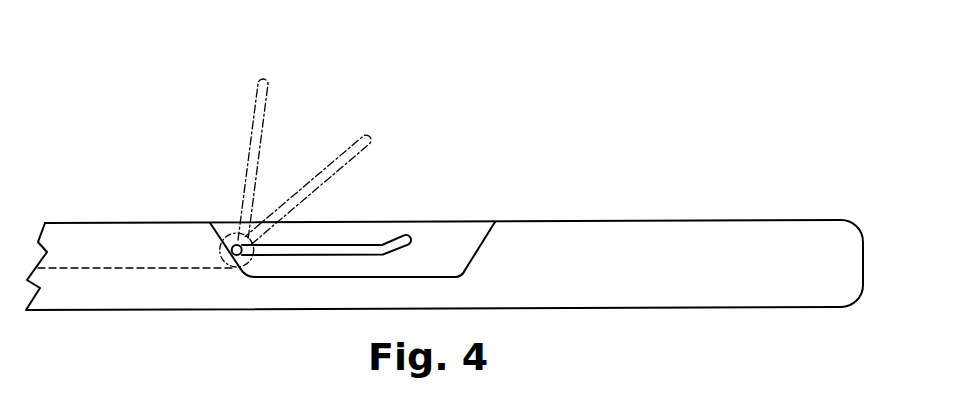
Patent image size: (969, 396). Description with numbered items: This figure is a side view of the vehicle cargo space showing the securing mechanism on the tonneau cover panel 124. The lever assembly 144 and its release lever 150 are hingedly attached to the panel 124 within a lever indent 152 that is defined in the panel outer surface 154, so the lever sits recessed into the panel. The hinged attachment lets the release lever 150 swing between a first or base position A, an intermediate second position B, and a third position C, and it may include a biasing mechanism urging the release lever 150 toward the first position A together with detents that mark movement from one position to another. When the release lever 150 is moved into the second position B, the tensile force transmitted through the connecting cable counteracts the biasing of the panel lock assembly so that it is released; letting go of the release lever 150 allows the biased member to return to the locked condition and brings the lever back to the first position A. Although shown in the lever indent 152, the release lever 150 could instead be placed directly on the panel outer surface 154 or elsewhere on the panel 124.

The tonneau cover panel 124 is at (699, 138).
The lever assembly 144 is at (262, 127).
The release lever 150 is at (327, 263).
The lever indent 152 is at (461, 238).
The panel outer surface 154 is at (618, 220).
The first position A is at (412, 237).
The second position B is at (372, 136).
The third position C is at (266, 87).